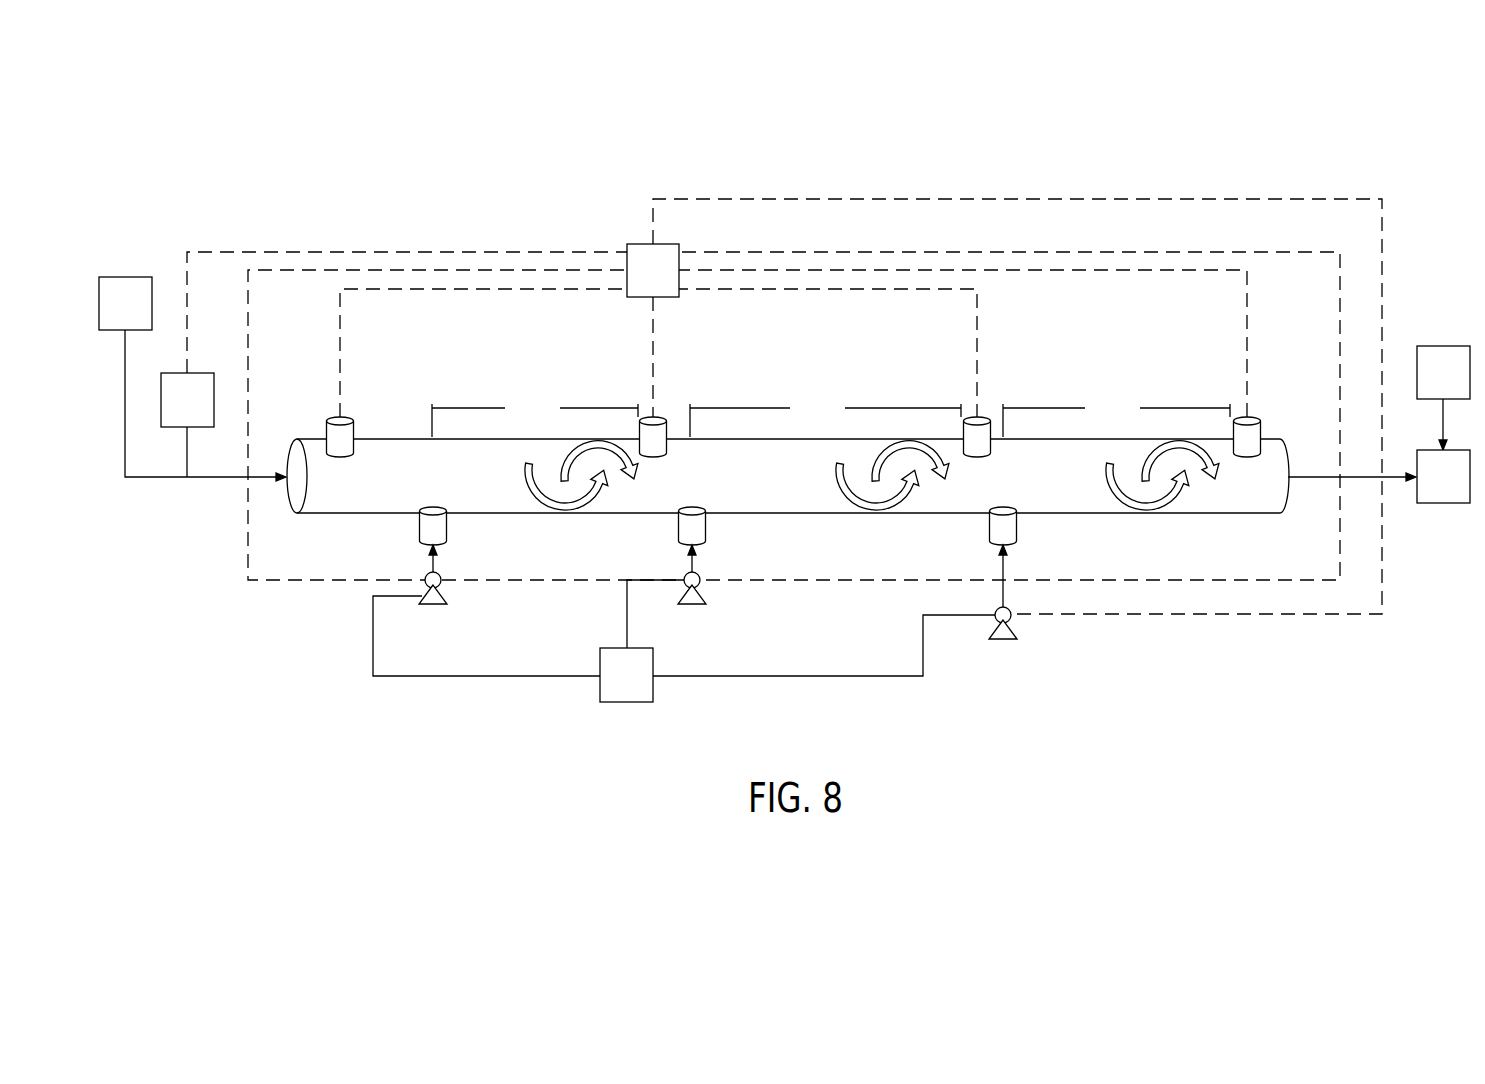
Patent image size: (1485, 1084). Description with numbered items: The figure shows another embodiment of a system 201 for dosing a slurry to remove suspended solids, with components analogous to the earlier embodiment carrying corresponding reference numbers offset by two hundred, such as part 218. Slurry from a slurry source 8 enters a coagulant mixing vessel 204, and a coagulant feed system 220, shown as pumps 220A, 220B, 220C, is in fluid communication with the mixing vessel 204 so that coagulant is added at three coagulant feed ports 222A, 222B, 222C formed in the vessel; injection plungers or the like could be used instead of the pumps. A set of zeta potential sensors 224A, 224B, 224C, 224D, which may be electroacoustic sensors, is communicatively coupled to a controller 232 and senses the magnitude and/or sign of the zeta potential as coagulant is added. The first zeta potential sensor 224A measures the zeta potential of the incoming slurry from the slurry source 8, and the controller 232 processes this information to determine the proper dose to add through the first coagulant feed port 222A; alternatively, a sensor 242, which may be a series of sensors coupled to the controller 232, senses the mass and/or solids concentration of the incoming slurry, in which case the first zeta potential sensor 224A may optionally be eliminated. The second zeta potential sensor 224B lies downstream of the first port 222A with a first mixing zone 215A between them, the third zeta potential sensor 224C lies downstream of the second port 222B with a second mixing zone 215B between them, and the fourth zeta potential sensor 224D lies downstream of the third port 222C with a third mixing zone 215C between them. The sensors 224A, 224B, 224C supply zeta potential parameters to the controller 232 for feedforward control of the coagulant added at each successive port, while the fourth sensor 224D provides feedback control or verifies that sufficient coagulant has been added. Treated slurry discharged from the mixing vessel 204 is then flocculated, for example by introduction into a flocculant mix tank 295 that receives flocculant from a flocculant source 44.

The system 201 is at (314, 115).
The slurry source 8 is at (192, 379).
The sensor 242 is at (187, 425).
The coagulant mixing vessel 204 is at (310, 437).
The first zeta potential sensor 224A is at (345, 416).
The second zeta potential sensor 224B is at (658, 416).
The third zeta potential sensor 224C is at (982, 416).
The fourth zeta potential sensor 224D is at (1252, 416).
The first mixing zone 215A is at (535, 416).
The second mixing zone 215B is at (825, 416).
The third mixing zone 215C is at (1116, 416).
The controller 232 is at (784, 406).
The flocculant source 44 is at (1443, 398).
The flocculant mix tank 295 is at (1443, 476).
The first coagulant feed port 222A is at (447, 534).
The second coagulant feed port 222B is at (706, 534).
The third coagulant feed port 222C is at (1017, 534).
The pump 220A is at (446, 596).
The pump 220B is at (706, 596).
The pump 220C is at (1017, 631).
The coagulant feed system 220 is at (964, 684).
The additive source 218 is at (626, 675).